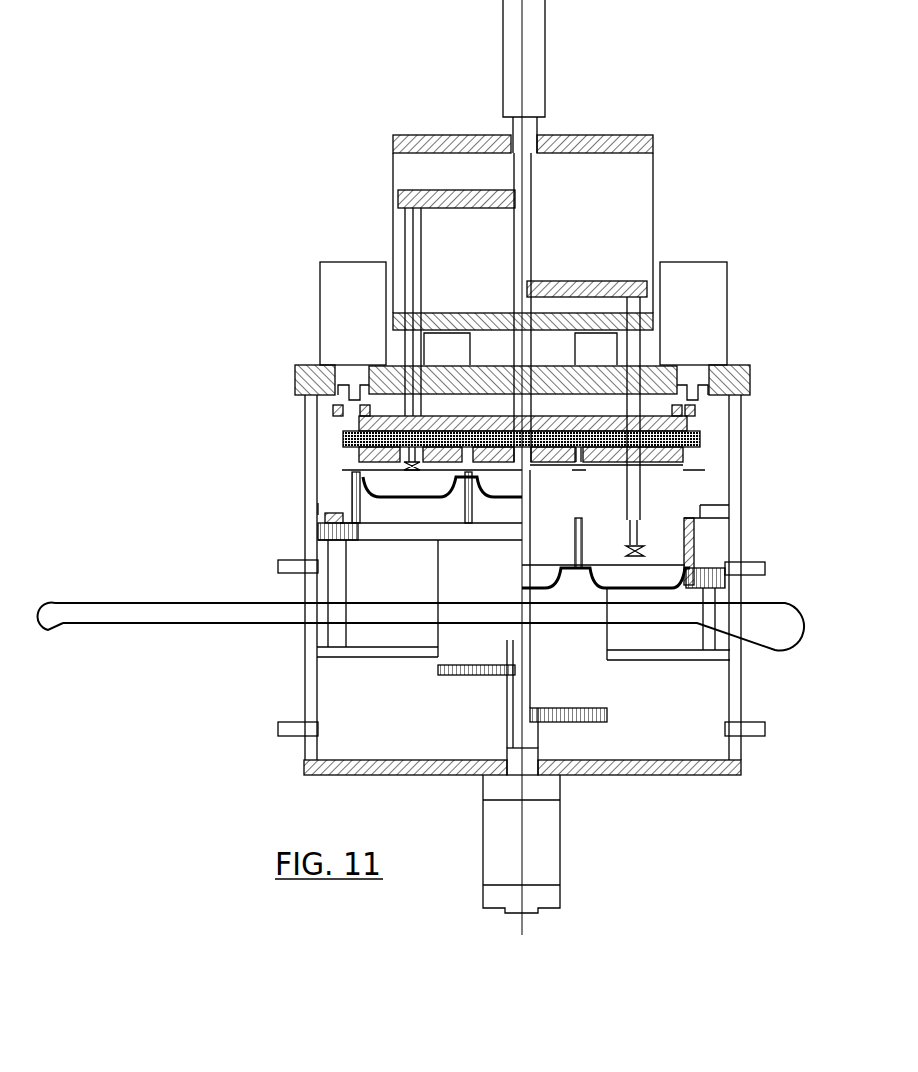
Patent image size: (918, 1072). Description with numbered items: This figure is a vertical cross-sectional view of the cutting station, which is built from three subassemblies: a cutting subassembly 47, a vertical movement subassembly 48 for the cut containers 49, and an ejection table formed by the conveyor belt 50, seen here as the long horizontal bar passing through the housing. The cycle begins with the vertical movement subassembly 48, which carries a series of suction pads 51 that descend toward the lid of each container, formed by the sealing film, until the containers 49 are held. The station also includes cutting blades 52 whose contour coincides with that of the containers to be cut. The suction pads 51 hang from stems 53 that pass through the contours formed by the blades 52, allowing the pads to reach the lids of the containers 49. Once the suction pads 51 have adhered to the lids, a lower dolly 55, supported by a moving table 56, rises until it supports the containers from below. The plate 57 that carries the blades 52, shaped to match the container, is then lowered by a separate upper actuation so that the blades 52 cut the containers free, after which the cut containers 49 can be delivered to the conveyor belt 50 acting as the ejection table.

The cutting subassembly 47 is at (338, 451).
The vertical movement subassembly 48 is at (447, 192).
The cut containers 49 is at (645, 585).
The conveyor belt 50 is at (132, 583).
The suction pads 51 is at (352, 478).
The cutting blades 52 is at (686, 461).
The stems 53 is at (402, 260).
The lower dolly 55 is at (350, 500).
The moving table 56 is at (397, 535).
The plate 57 is at (658, 418).